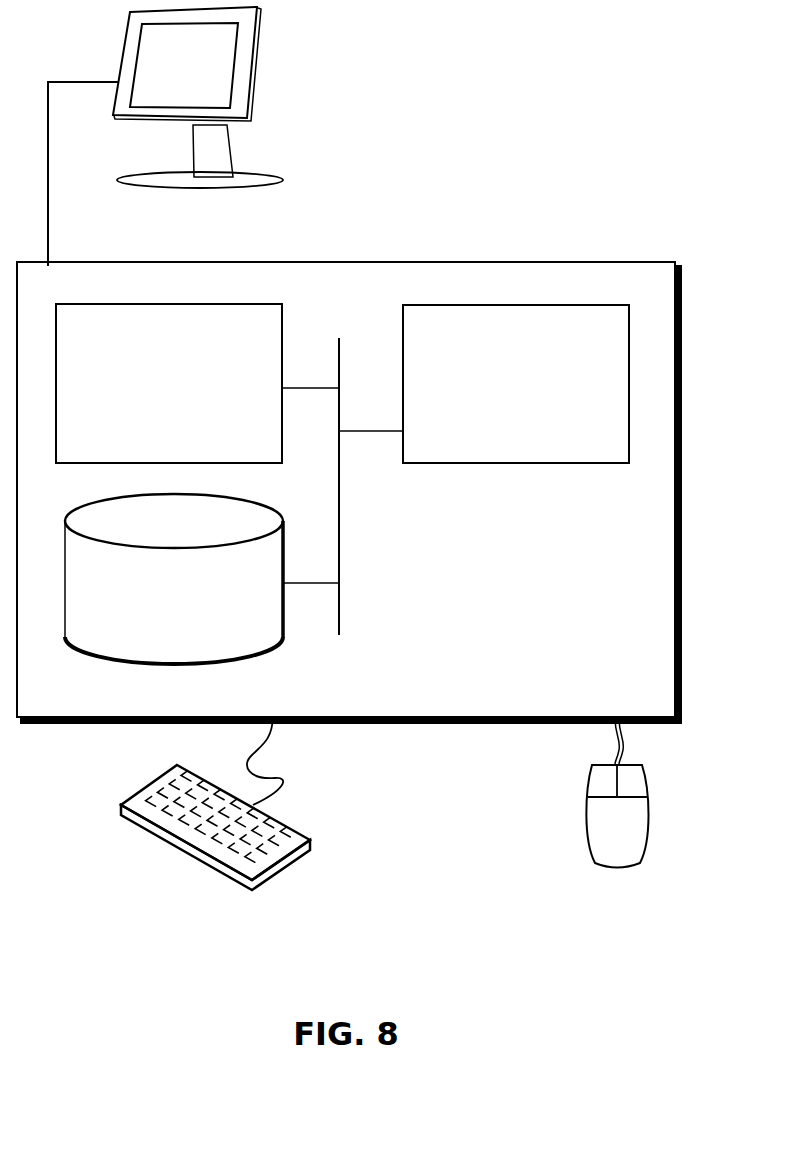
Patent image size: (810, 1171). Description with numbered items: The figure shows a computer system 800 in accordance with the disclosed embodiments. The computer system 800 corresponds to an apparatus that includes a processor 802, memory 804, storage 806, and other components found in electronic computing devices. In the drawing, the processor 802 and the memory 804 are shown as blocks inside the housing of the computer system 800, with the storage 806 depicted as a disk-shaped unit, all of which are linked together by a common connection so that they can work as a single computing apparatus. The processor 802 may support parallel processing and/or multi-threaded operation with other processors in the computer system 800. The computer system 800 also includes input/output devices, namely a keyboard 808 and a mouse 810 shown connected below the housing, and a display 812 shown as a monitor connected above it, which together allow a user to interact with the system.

The computer system 800 is at (393, 240).
The processor 802 is at (498, 396).
The memory 804 is at (150, 395).
The storage 806 is at (157, 607).
The keyboard 808 is at (143, 827).
The mouse 810 is at (597, 838).
The display 812 is at (165, 136).